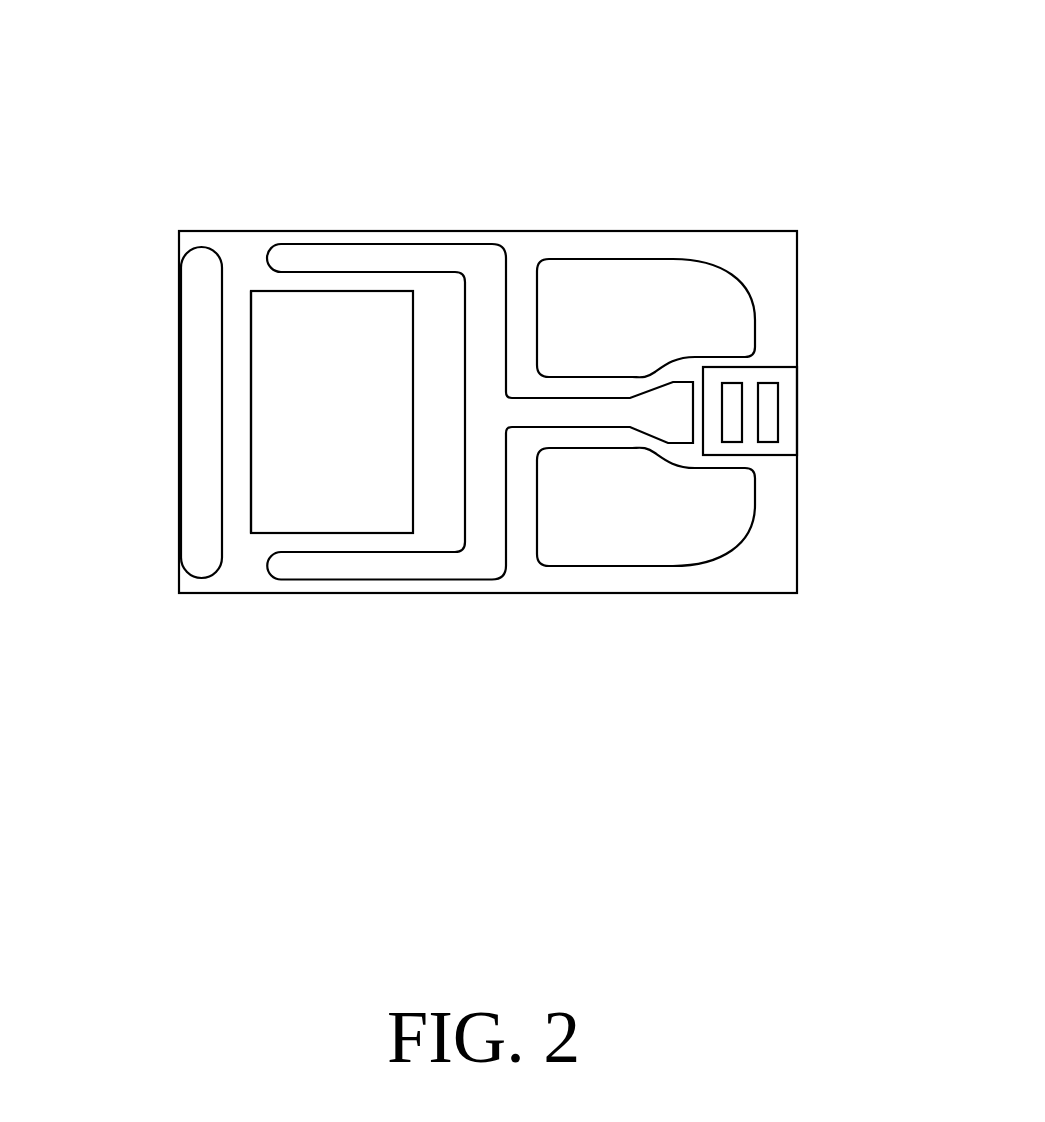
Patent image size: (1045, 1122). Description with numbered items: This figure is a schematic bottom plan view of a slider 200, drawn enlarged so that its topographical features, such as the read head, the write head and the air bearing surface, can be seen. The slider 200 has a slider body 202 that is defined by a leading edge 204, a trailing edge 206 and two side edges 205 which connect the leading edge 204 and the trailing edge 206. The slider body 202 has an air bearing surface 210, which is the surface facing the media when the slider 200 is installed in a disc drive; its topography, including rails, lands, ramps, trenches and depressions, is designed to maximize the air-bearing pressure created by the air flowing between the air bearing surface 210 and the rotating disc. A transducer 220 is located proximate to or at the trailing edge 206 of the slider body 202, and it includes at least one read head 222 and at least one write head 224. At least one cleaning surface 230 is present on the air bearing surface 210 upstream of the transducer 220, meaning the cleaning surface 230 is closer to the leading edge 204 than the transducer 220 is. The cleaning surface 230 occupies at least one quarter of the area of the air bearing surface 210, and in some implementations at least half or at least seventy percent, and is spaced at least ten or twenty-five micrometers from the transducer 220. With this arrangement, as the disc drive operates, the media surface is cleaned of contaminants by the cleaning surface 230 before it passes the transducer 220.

The slider 200 is at (653, 160).
The slider body 202 is at (516, 222).
The leading edge 204 is at (179, 398).
The side edges 205 is at (342, 231).
The trailing edge 206 is at (798, 259).
The air bearing surface 210 is at (440, 526).
The transducer 220 is at (770, 368).
The read head 222 is at (738, 442).
The write head 224 is at (779, 403).
The cleaning surface 230 is at (250, 518).